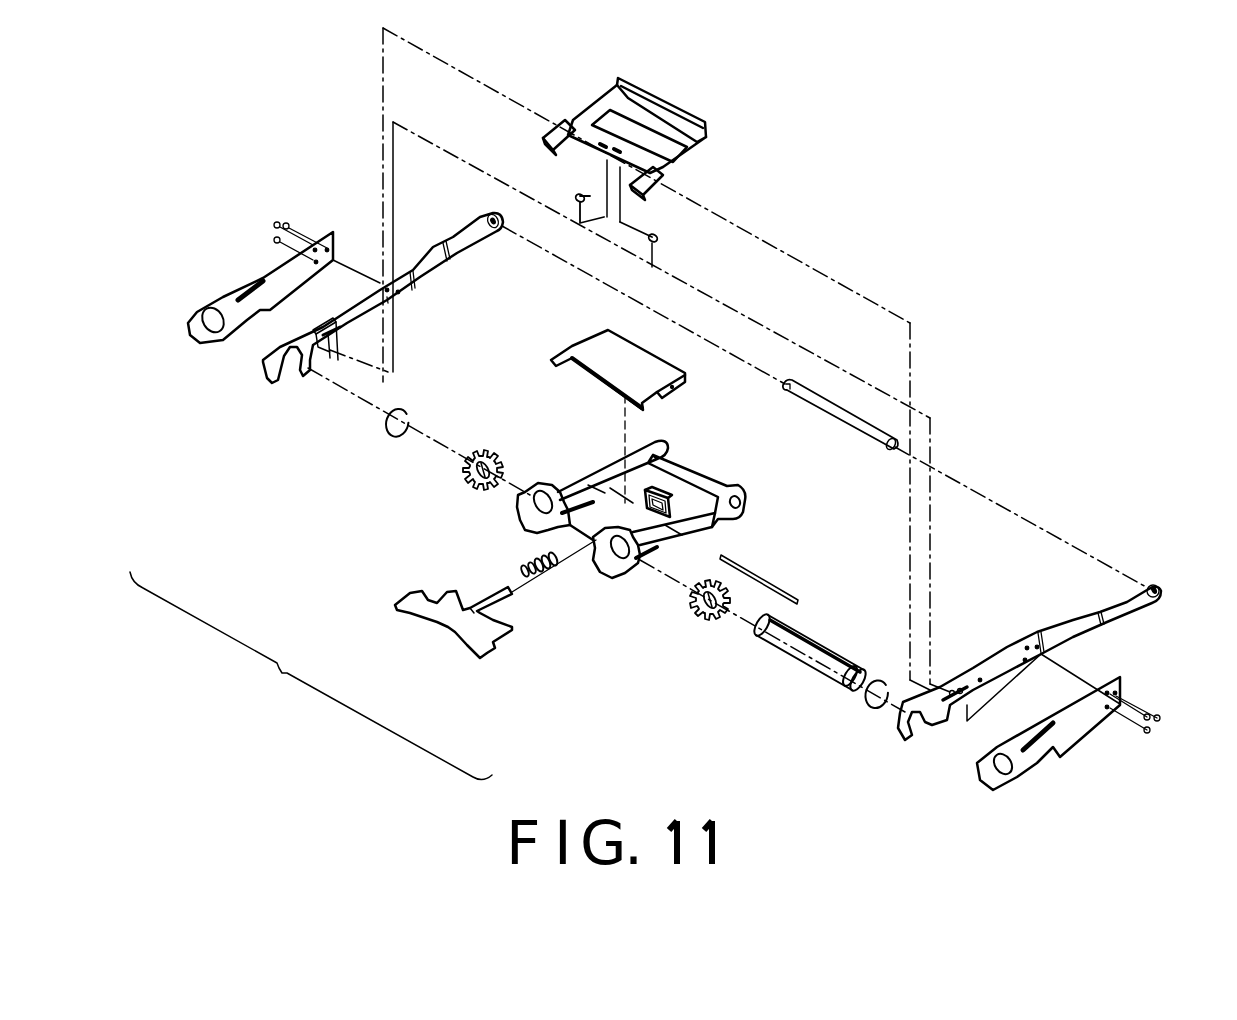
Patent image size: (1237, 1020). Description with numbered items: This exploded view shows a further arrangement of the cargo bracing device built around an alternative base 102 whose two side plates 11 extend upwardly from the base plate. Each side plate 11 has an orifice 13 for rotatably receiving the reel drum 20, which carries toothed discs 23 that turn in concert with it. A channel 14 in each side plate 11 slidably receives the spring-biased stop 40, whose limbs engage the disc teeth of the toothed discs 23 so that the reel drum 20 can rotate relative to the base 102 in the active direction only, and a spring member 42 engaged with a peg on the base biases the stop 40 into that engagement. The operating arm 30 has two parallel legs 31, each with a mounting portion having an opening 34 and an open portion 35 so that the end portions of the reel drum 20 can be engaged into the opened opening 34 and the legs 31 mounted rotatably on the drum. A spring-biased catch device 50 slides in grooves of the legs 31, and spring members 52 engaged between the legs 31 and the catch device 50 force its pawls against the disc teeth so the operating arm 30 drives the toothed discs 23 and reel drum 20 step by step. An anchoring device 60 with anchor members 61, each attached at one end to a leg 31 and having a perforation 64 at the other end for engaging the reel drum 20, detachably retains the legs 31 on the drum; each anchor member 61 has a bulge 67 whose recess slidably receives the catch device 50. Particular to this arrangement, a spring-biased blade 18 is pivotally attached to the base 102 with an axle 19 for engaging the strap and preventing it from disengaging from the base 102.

The side plates 11 is at (577, 493).
The orifice 13 is at (542, 495).
The channel 14 is at (668, 532).
The spring-biased blade 18 is at (603, 343).
The axle 19 is at (790, 590).
The reel drum 20 is at (787, 653).
The toothed discs 23 is at (707, 620).
The operating arm 30 is at (1143, 607).
The legs 31 is at (1120, 600).
The opening 34 is at (282, 383).
The open portion 35 is at (920, 733).
The spring-biased stop 40 is at (430, 610).
The spring member 42 is at (543, 580).
The spring-biased catch device 50 is at (588, 135).
The spring members 52 is at (592, 210).
The anchoring device 60 is at (1127, 680).
The anchor members 61 is at (1090, 720).
The perforation 64 is at (1003, 767).
The bulge 67 is at (1043, 740).
The base 102 is at (757, 506).